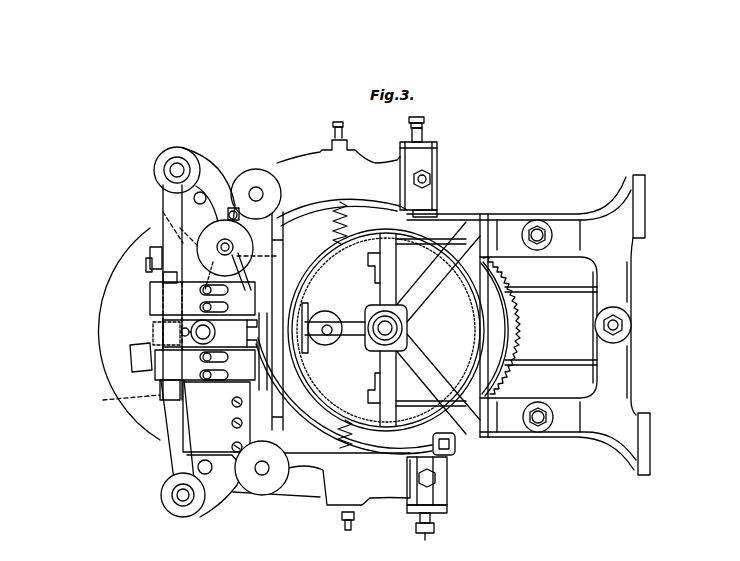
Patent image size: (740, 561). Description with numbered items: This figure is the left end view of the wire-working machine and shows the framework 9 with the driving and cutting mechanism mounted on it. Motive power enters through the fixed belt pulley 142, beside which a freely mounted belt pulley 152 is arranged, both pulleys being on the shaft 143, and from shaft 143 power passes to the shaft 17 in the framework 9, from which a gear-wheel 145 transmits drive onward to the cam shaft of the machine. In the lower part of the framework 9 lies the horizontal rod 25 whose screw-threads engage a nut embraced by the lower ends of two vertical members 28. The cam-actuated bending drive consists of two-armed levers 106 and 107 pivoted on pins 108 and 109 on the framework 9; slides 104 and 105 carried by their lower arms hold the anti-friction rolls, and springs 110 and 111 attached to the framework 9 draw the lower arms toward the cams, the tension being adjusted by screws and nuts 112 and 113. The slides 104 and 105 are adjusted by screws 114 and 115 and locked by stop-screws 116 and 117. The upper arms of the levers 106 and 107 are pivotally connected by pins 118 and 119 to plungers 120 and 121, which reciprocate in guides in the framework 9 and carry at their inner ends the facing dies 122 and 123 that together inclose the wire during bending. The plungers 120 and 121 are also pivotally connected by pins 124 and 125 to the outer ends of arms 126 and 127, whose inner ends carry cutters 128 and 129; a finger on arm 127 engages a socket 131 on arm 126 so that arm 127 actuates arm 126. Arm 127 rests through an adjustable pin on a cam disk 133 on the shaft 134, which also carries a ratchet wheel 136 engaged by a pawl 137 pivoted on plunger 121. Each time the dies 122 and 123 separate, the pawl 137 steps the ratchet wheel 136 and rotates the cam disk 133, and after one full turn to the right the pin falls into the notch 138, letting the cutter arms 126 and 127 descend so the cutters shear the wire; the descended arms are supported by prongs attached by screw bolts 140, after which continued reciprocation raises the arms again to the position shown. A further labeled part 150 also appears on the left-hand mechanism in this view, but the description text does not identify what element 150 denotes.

The framework 9 is at (580, 422).
The shaft 17 is at (326, 322).
The horizontal rod 25 is at (606, 326).
The vertical members 28 is at (563, 293).
The slide 104 is at (438, 460).
The slide 105 is at (437, 211).
The two-armed lever 106 is at (305, 480).
The two-armed lever 107 is at (365, 175).
The pin 108 is at (262, 472).
The pin 109 is at (260, 192).
The spring 110 is at (330, 440).
The spring 111 is at (342, 228).
The screw and nut 112 is at (350, 524).
The screw and nut 113 is at (334, 142).
The screw 114 is at (432, 530).
The screw 115 is at (424, 123).
The stop-screw 116 is at (430, 480).
The stop-screw 117 is at (432, 178).
The pin 118 is at (210, 472).
The pin 119 is at (158, 172).
The plunger 120 is at (205, 490).
The plunger 121 is at (196, 173).
The die 122 is at (220, 342).
The die 123 is at (215, 328).
The pin 124 is at (181, 497).
The pin 125 is at (178, 166).
The arm 126 is at (175, 455).
The arm 127 is at (175, 197).
The cutter 128 is at (162, 405).
The cutter 129 is at (160, 285).
The socket 131 is at (133, 360).
The cam disk 133 is at (222, 228).
The shaft 134 is at (233, 247).
The ratchet wheel 136 is at (252, 257).
The pawl 137 is at (175, 232).
The notch 138 is at (207, 225).
The screw bolts 140 is at (205, 307).
The fixed belt pulley 142 is at (478, 328).
The shaft 143 is at (370, 340).
The gear-wheel 145 is at (500, 367).
The bracket 150 is at (143, 290).
The freely mounted belt pulley 152 is at (167, 277).